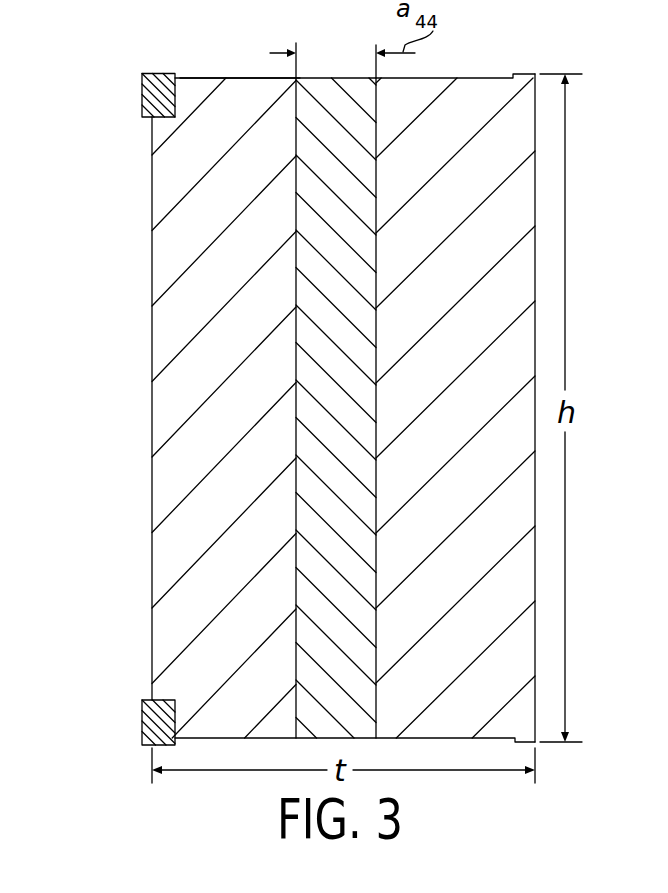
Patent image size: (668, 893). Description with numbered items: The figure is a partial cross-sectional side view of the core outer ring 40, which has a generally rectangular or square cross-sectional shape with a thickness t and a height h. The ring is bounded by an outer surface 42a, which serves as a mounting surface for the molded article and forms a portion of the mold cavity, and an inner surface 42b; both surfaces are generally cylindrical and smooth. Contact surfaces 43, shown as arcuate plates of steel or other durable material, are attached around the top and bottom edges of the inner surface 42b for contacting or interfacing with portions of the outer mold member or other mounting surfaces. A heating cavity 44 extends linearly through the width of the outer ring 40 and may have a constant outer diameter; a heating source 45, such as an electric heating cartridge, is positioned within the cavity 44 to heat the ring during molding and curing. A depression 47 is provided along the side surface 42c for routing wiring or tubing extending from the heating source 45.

The core outer ring 40 is at (124, 315).
The outer surface 42a is at (535, 220).
The inner surface 42b is at (152, 376).
The side surface 42c is at (223, 77).
The contact surfaces 43 is at (142, 93).
The heating cavity 44 is at (296, 218).
The heating source 45 is at (327, 520).
The depression 47 is at (181, 65).